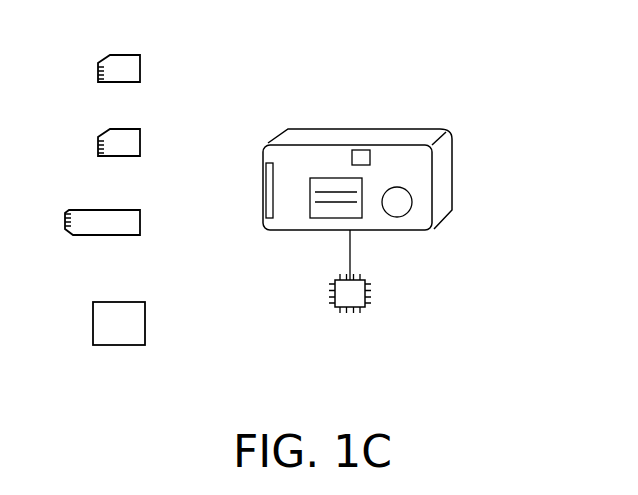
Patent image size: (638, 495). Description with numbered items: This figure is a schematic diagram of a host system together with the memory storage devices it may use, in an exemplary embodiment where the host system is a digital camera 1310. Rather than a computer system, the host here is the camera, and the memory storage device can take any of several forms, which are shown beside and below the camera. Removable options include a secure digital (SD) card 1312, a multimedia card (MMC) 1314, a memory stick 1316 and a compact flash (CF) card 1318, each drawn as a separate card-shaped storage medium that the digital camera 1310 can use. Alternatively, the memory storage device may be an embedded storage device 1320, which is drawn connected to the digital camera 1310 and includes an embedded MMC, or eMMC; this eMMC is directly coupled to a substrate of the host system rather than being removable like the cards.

The digital camera 1310 is at (453, 167).
The secure digital (SD) card 1312 is at (140, 61).
The multimedia card (MMC) 1314 is at (140, 137).
The memory stick 1316 is at (140, 222).
The compact flash (CF) card 1318 is at (145, 316).
The embedded storage device 1320 is at (372, 293).